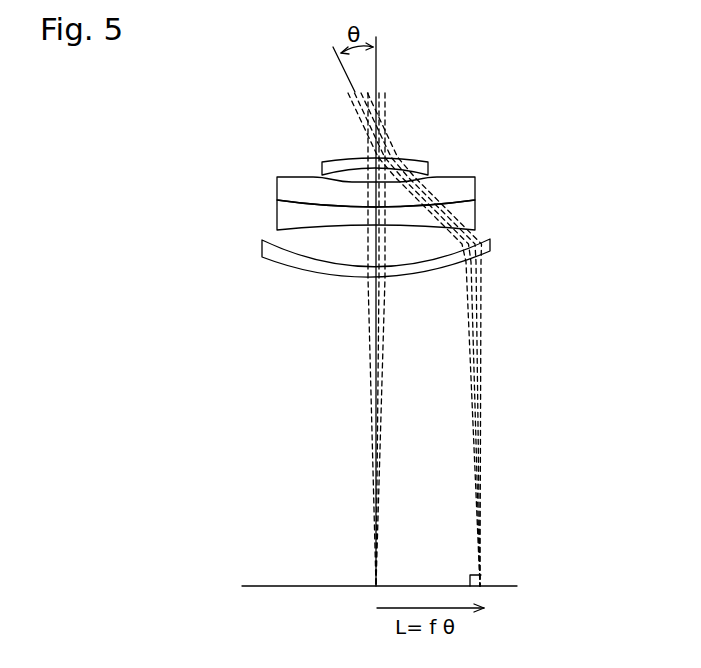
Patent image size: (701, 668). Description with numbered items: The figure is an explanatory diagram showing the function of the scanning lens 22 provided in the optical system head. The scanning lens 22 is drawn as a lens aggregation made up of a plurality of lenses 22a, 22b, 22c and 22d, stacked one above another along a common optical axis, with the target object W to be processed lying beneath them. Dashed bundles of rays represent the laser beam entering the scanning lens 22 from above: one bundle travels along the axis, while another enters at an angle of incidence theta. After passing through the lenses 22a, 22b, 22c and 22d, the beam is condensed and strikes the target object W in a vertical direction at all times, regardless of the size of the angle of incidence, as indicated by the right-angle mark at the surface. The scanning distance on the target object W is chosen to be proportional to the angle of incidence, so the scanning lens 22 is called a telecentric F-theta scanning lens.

The scanning lens 22 is at (436, 204).
The lens 22a is at (430, 165).
The lens 22b is at (478, 187).
The lens 22c is at (477, 211).
The lens 22d is at (412, 259).
The target object to be processed W is at (323, 585).